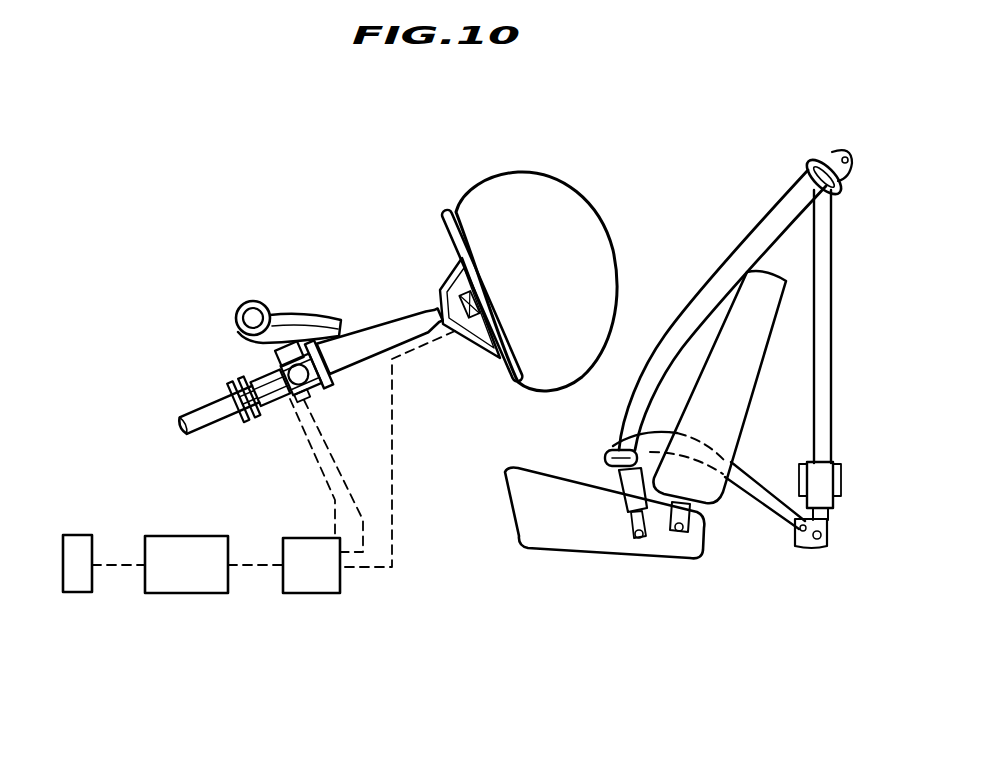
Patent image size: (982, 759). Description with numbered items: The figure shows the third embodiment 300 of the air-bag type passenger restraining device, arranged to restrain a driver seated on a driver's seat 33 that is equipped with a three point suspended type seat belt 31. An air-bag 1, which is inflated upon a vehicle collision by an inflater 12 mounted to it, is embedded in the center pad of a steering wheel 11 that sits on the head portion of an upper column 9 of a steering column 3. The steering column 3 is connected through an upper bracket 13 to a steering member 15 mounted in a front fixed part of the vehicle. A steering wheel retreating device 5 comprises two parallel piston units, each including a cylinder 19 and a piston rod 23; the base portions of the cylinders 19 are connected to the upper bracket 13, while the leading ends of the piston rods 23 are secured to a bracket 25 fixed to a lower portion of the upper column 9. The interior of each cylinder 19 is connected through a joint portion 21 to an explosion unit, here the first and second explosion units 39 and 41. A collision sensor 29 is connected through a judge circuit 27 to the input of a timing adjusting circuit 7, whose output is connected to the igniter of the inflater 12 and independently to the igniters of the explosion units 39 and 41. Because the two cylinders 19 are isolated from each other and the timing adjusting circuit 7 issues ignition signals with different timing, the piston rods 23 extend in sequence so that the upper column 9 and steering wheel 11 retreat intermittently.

The third embodiment 300 is at (691, 103).
The air-bag 1 is at (536, 175).
The steering column 3 is at (375, 292).
The steering wheel retreating device 5 is at (277, 416).
The timing adjusting circuit 7 is at (311, 594).
The upper column 9 is at (366, 332).
The steering wheel 11 is at (448, 205).
The inflater 12 is at (460, 346).
The upper bracket 13 is at (328, 372).
The steering member 15 is at (252, 301).
The cylinder 19 is at (282, 404).
The joint portion 21 is at (283, 357).
The piston rod 23 is at (258, 418).
The bracket 25 is at (236, 392).
The judge circuit 27 is at (190, 594).
The collision sensor 29 is at (78, 594).
The seat belt 31 is at (733, 252).
The driver's seat 33 is at (636, 572).
The first explosion unit 39 is at (304, 402).
The second explosion unit 41 is at (296, 346).